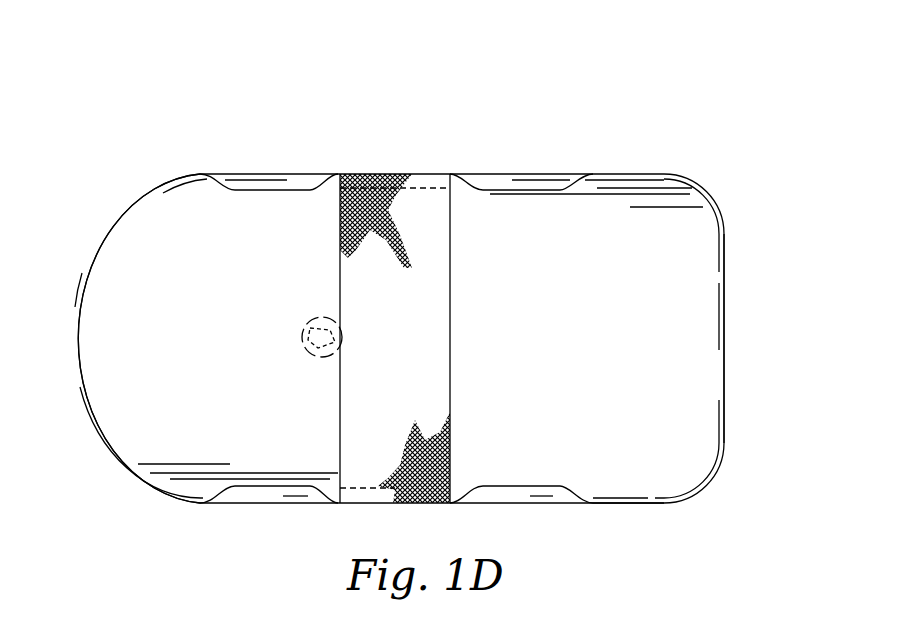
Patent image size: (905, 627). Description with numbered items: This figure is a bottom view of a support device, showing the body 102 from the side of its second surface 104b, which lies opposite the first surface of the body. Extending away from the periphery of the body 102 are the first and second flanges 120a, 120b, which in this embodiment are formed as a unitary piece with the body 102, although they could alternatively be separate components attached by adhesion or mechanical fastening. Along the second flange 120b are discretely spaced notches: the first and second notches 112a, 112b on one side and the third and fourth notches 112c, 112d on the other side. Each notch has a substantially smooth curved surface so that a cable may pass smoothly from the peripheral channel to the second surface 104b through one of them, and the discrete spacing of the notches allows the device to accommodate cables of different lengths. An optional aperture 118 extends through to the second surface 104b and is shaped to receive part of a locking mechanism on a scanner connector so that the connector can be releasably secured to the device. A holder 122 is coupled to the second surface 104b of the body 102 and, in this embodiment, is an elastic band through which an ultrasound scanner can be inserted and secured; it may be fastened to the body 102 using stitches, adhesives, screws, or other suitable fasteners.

The body 102 is at (704, 150).
The second surface 104b is at (680, 375).
The first notch 112a is at (278, 190).
The second notch 112b is at (548, 190).
The third notch 112c is at (272, 489).
The fourth notch 112d is at (525, 489).
The aperture 118 is at (300, 333).
The first flange 120a is at (580, 504).
The second flange 120b is at (95, 432).
The holder 122 is at (438, 207).